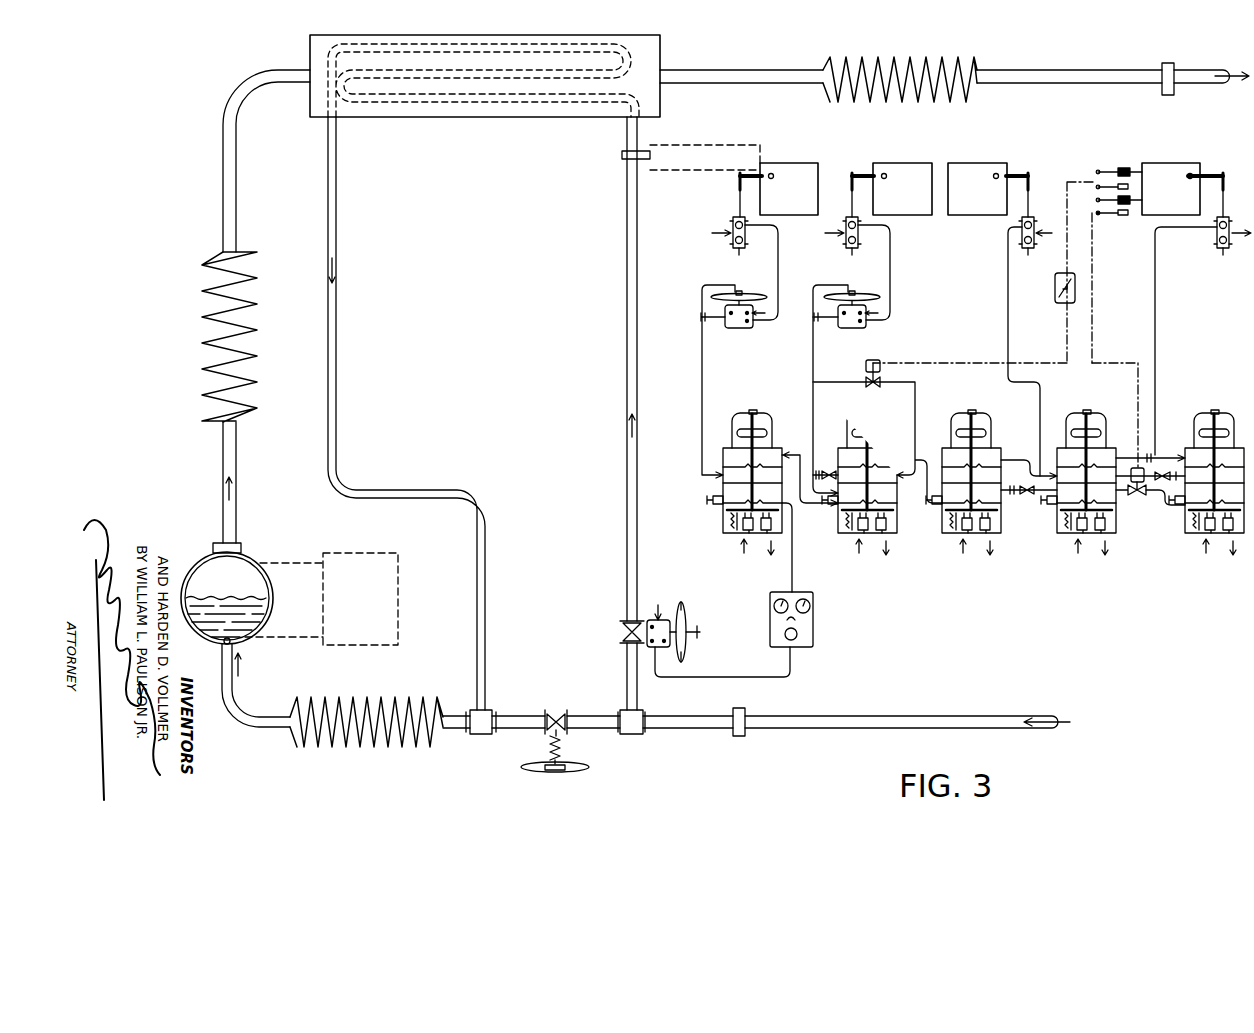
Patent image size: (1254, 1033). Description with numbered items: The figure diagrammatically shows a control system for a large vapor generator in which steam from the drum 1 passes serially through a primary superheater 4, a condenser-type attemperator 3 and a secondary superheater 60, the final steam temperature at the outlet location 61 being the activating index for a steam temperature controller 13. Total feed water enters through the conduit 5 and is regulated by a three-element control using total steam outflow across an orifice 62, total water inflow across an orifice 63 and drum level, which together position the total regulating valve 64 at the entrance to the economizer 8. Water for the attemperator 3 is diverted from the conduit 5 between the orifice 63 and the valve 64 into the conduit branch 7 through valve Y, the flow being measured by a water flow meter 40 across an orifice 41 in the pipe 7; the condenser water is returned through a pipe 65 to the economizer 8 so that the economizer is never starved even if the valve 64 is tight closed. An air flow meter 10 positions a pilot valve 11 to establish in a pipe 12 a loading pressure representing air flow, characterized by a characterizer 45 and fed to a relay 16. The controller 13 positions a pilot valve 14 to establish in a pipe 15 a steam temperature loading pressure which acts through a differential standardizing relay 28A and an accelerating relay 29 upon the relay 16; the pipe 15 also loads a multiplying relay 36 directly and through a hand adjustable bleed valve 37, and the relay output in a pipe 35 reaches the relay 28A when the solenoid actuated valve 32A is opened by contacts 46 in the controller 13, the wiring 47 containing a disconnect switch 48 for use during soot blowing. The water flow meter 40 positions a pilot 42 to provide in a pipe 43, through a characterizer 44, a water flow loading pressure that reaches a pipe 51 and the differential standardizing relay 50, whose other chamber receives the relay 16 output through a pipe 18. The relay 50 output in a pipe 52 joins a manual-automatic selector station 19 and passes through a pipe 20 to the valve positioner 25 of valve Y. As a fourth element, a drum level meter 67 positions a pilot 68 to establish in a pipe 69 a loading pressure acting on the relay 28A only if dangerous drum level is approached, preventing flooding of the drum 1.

The drum 1 is at (268, 582).
The attemperator 3 is at (485, 86).
The primary superheater 4 is at (276, 355).
The conduit 5 is at (920, 716).
The conduit branch 7 is at (627, 333).
The economizer 8 is at (372, 675).
The air flow meter 10 is at (892, 176).
The pilot valve 11 is at (846, 247).
The pipe 12 is at (890, 272).
The steam temperature controller 13 is at (1182, 164).
The pilot valve 14 is at (1230, 250).
The pipe 15 is at (1155, 322).
The relay 16 is at (865, 410).
The pipe 18 is at (800, 455).
The manual-automatic selector station 19 is at (813, 613).
The pipe 20 is at (790, 677).
The valve positioner 25 is at (685, 614).
The differential standardizing relay 28A is at (1091, 410).
The accelerating relay 29 is at (967, 410).
The solenoid actuated valve 32A is at (1141, 498).
The pipe 35 is at (1165, 496).
The multiplying relay 36 is at (1210, 410).
The hand adjustable bleed valve 37 is at (1160, 458).
The water flow meter 40 is at (779, 166).
The orifice 41 is at (622, 156).
The pilot 42 is at (733, 247).
The pipe 43 is at (778, 296).
The characterizer 44 is at (728, 328).
The characterizer 45 is at (841, 328).
The contacts 46 is at (1119, 205).
The wiring 47 is at (1067, 186).
The disconnect switch 48 is at (1060, 305).
The differential standardizing relay 50 is at (757, 410).
The pipe 51 is at (702, 353).
The pipe 52 is at (792, 572).
The secondary superheater 60 is at (984, 48).
The location 61 is at (1072, 72).
The orifice 62 is at (1168, 63).
The orifice 63 is at (740, 736).
The total regulating valve 64 is at (559, 712).
The pipe 65 is at (336, 402).
The drum level meter 67 is at (342, 596).
The pilot 68 is at (1034, 254).
The pipe 69 is at (1008, 298).